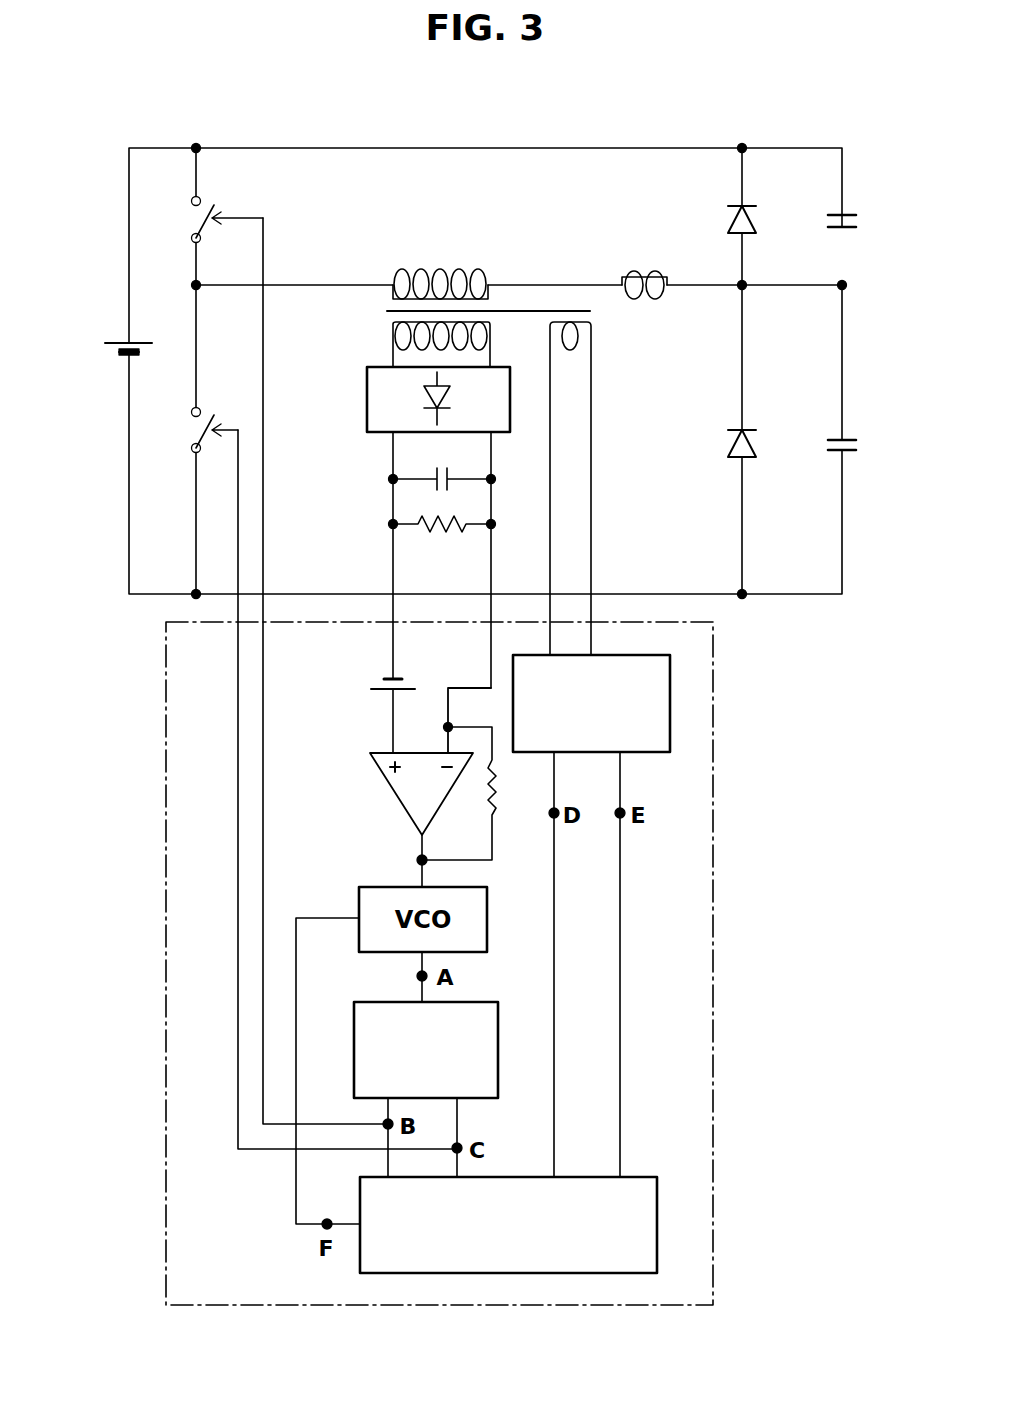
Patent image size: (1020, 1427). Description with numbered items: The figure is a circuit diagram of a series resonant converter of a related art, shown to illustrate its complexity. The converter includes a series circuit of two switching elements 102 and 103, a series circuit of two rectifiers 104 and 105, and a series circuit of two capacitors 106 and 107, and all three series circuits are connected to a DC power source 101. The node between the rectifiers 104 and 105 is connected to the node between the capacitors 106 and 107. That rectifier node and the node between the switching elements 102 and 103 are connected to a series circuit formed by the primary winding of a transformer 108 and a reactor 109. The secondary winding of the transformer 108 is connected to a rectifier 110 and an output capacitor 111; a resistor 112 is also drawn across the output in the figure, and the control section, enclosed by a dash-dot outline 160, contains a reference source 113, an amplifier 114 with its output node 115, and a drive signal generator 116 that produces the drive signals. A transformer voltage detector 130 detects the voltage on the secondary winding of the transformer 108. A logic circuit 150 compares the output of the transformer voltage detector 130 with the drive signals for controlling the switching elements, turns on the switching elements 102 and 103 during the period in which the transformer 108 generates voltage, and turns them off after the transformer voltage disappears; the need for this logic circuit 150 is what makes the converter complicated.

The DC power source 101 is at (124, 344).
The switching element 102 is at (190, 232).
The switching element 103 is at (190, 445).
The rectifier 104 is at (748, 206).
The rectifier 105 is at (748, 428).
The capacitor 106 is at (852, 230).
The capacitor 107 is at (852, 453).
The transformer 108 is at (437, 286).
The reactor 109 is at (642, 284).
The rectifier 110 is at (367, 400).
The output capacitor 111 is at (433, 477).
The resistor 112 is at (433, 523).
The reference voltage source 113 is at (388, 679).
The error amplifier 114 is at (399, 800).
The error signal node 115 is at (388, 890).
The drive signal generator 116 is at (361, 1002).
The transformer voltage detector 130 is at (634, 752).
The logic circuit 150 is at (640, 1177).
The control circuit 160 is at (713, 900).